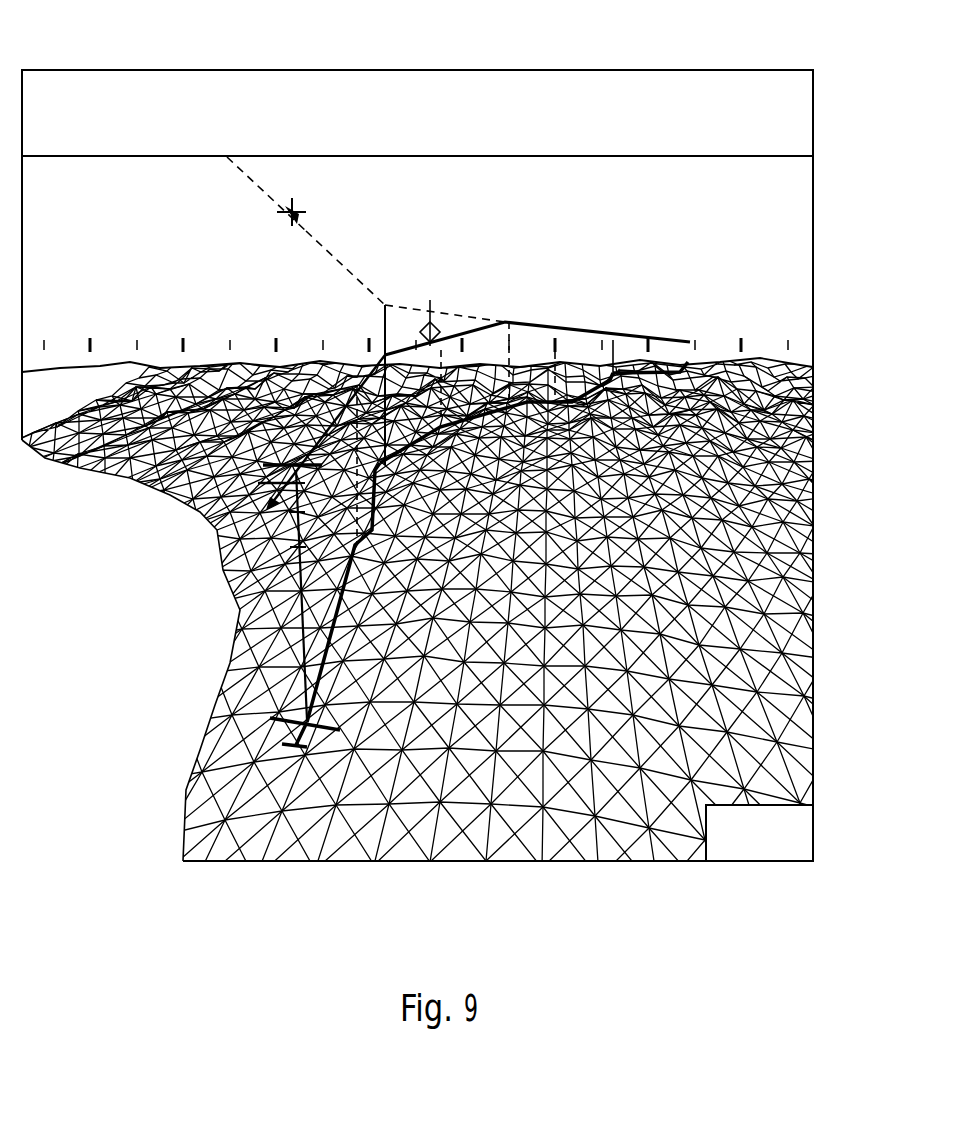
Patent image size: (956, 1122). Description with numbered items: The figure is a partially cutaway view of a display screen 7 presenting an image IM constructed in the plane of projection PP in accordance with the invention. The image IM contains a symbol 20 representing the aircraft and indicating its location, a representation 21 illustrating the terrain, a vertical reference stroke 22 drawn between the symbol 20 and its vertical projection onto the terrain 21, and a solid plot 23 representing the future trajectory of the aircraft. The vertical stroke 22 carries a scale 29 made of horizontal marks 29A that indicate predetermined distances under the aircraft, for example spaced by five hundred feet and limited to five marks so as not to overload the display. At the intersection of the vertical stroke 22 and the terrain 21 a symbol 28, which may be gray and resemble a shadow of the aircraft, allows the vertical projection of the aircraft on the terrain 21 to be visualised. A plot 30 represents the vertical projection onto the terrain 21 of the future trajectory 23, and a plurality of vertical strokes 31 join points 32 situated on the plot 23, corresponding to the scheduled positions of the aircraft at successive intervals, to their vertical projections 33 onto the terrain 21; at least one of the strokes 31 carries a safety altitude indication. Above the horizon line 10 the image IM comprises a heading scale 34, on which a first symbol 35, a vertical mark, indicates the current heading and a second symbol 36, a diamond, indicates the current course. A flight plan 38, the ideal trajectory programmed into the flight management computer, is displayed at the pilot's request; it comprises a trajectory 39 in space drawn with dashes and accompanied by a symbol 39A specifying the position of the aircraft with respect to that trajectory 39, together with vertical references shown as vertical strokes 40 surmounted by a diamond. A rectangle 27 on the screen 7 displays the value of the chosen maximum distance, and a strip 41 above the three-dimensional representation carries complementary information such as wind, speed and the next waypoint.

The strip 41 is at (170, 115).
The image IM is at (590, 222).
The plane of projection PP is at (818, 195).
The horizon line 10 is at (109, 350).
The flight plan 38 is at (345, 240).
The trajectory in space 39 is at (325, 245).
The symbol 39A is at (291, 220).
The vertical strokes 40 is at (385, 335).
The first symbol 35 is at (438, 296).
The second symbol 36 is at (418, 325).
The plot 23 is at (472, 326).
The points 32 is at (511, 340).
The vertical strokes 31 is at (568, 378).
The vertical projections 33 is at (618, 372).
The heading scale 34 is at (786, 350).
The symbol 20 is at (212, 512).
The scale 29 is at (215, 524).
The horizontal marks 29A is at (238, 566).
The vertical reference stroke 22 is at (236, 612).
The plot 30 is at (233, 666).
The symbol 28 is at (270, 718).
The representation 21 is at (453, 838).
The display screen 7 is at (573, 862).
The rectangle 27 is at (759, 832).